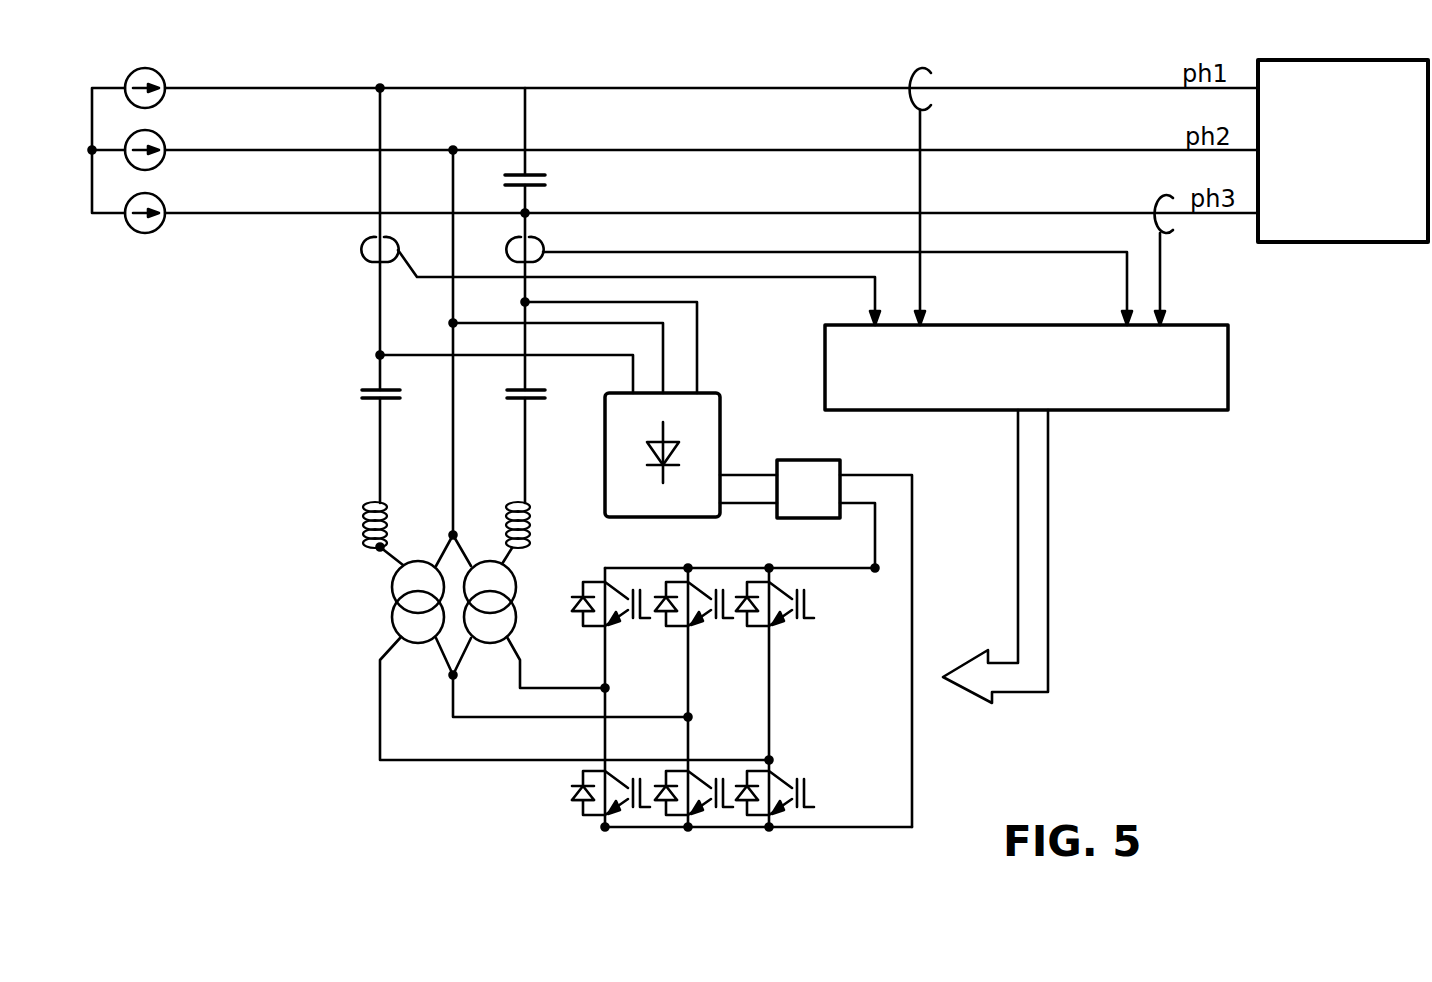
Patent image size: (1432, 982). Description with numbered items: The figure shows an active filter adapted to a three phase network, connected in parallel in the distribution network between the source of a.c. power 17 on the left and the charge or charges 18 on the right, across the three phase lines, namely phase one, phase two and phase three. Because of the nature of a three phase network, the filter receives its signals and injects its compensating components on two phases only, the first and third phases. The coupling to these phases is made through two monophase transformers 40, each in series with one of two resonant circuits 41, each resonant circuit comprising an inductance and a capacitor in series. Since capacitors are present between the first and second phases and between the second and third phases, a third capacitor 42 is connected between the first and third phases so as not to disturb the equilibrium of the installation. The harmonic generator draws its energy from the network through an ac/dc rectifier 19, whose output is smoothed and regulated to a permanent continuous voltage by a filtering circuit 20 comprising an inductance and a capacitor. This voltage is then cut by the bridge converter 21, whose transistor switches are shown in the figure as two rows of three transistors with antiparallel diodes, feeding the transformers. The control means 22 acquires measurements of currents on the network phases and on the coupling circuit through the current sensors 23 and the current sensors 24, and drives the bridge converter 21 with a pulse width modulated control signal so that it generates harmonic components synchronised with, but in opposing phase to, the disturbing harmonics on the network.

The source of a.c. power 17 is at (140, 236).
The charge 18 is at (1410, 246).
The ac/dc rectifier 19 is at (723, 409).
The filtering circuit 20 is at (822, 434).
The bridge converter 21 is at (700, 830).
The controller 22 is at (1194, 412).
The current sensors 23 is at (922, 68).
The current sensors 24 is at (358, 257).
The transformer 40 is at (388, 603).
The resonant circuits 41 is at (380, 458).
The third capacitor 42 is at (547, 186).